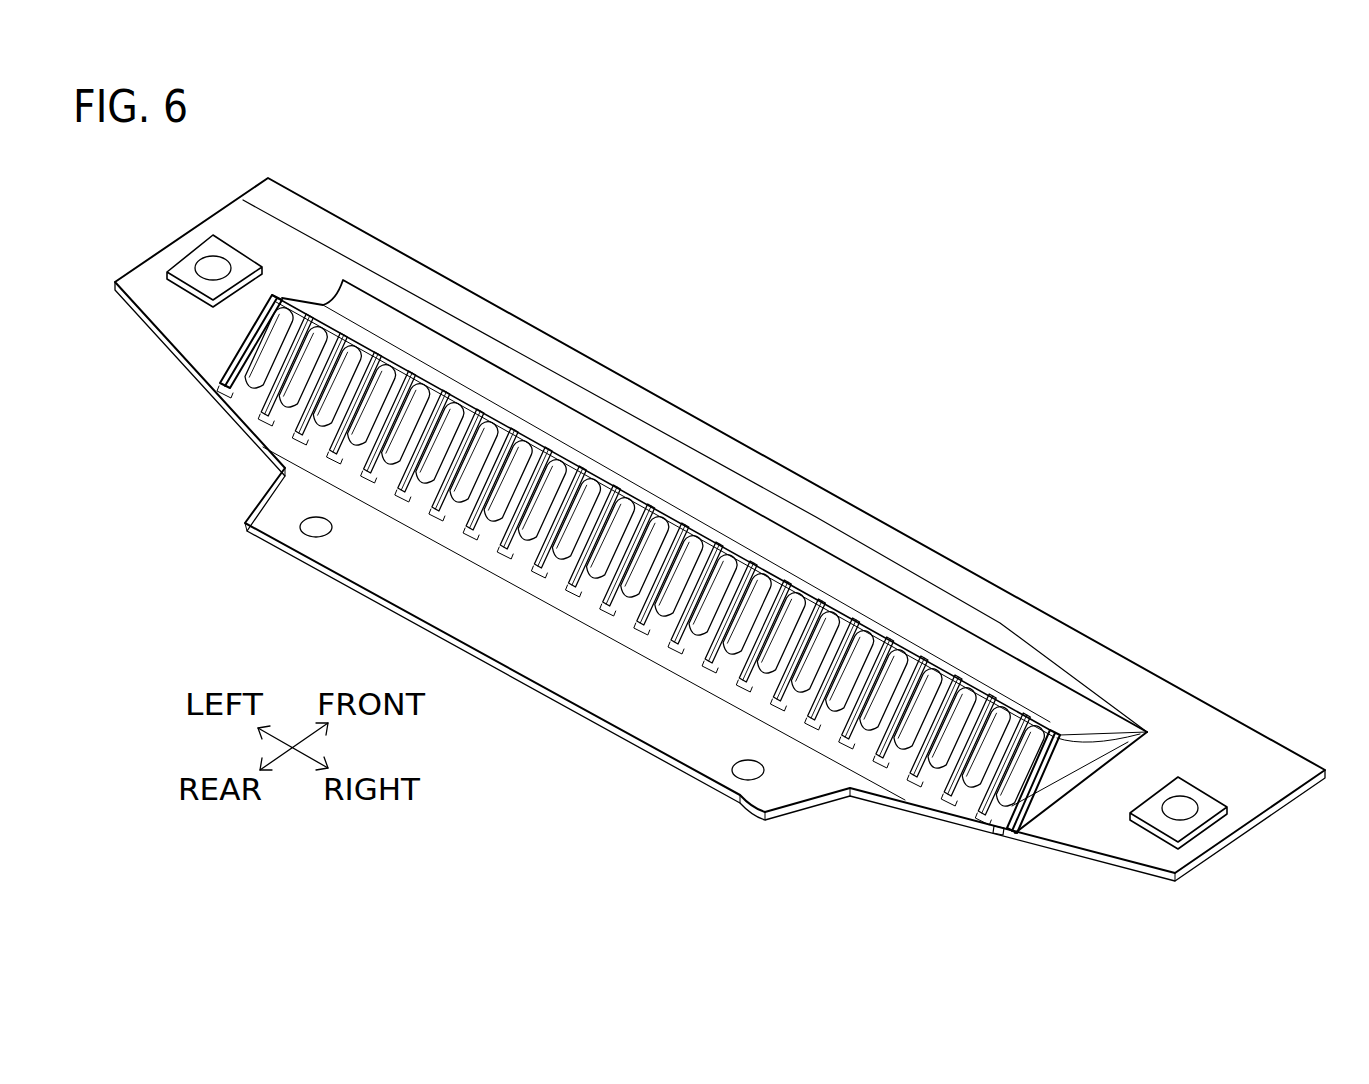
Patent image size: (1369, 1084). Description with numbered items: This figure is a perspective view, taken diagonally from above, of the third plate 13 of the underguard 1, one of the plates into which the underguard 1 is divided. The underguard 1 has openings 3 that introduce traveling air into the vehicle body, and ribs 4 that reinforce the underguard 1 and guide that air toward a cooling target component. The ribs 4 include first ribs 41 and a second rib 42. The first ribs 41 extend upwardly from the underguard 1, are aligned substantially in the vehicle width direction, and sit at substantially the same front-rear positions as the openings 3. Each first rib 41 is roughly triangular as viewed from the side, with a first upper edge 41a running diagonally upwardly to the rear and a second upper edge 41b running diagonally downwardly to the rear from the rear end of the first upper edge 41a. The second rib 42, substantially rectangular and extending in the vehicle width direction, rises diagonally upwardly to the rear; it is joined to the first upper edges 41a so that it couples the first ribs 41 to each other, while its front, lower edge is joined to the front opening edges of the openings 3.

The underguard 1 is at (802, 328).
The openings 3 is at (256, 386).
The ribs 4 is at (310, 286).
The third plate 13 is at (830, 510).
The first ribs 41 is at (704, 570).
The first upper edge 41a is at (1088, 740).
The second upper edge 41b is at (1020, 763).
The second rib 42 is at (610, 455).